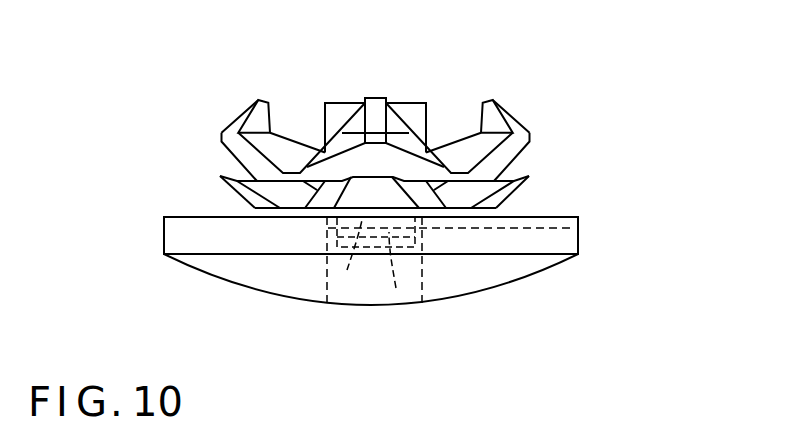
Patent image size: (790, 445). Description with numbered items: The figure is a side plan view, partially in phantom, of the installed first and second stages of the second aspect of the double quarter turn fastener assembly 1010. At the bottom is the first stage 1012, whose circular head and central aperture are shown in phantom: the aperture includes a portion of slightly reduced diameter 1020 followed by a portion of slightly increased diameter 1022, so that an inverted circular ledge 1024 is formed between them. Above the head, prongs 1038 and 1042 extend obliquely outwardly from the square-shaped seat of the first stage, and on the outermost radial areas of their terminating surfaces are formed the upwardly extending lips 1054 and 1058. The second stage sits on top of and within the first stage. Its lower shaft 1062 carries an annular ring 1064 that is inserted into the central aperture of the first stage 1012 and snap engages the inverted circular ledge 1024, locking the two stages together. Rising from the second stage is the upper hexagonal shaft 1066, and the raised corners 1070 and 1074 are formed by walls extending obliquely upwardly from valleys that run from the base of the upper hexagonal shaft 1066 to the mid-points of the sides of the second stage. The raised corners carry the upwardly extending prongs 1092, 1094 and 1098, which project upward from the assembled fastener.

The fastener assembly 1010 is at (579, 86).
The first stage 1012 is at (575, 262).
The portion of slightly reduced diameter 1020 is at (575, 228).
The portion of slightly increased diameter 1022 is at (423, 277).
The inverted circular ledge 1024 is at (337, 233).
The prong 1038 is at (517, 193).
The prong 1042 is at (220, 177).
The upwardly extending lip 1054 is at (529, 177).
The upwardly extending lip 1058 is at (221, 175).
The lower shaft 1062 is at (347, 270).
The annular ring 1064 is at (396, 288).
The upper hexagonal shaft 1066 is at (412, 103).
The raised corner 1070 is at (529, 136).
The raised corner 1074 is at (221, 131).
The upwardly extending prong 1092 is at (373, 98).
The upwardly extending prong 1094 is at (489, 100).
The upwardly extending prong 1098 is at (259, 98).